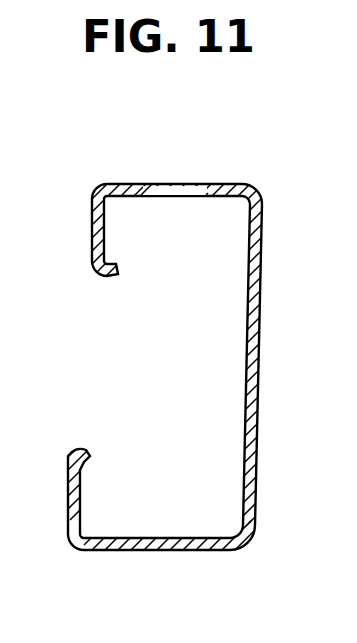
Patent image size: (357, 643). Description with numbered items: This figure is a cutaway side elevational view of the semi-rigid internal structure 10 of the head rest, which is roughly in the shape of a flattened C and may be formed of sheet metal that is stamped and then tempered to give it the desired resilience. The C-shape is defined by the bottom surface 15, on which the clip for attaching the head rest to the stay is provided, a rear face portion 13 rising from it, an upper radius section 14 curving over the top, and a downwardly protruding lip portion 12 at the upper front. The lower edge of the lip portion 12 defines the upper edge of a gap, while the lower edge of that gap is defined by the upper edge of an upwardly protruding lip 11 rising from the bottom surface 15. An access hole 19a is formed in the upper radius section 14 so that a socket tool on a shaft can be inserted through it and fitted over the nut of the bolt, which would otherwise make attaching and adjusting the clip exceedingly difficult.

The semi-rigid internal structure 10 is at (268, 300).
The upwardly protruding lip 11 is at (69, 478).
The downwardly protruding lip portion 12 is at (93, 243).
The rear face portion 13 is at (258, 360).
The upper radius section 14 is at (236, 190).
The bottom surface 15 is at (153, 551).
The access hole 19a is at (152, 190).